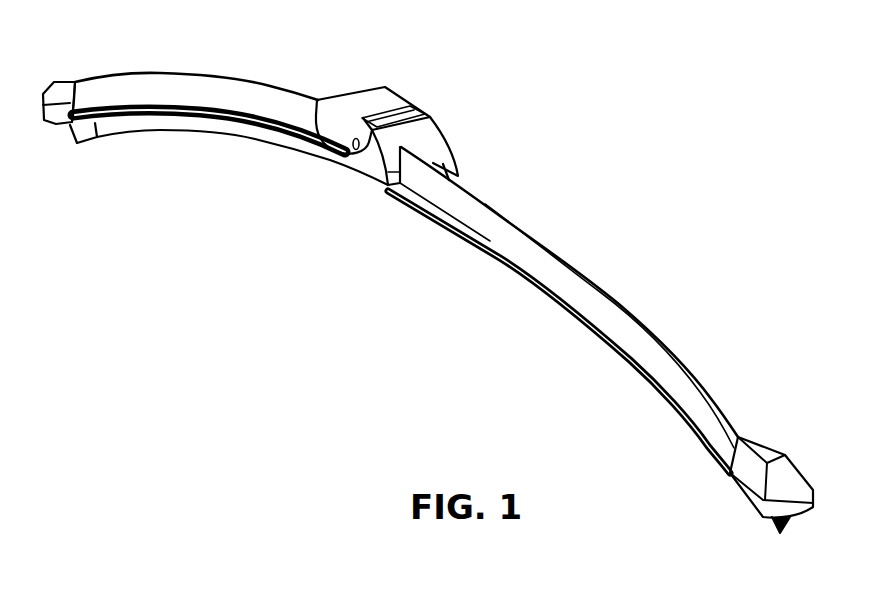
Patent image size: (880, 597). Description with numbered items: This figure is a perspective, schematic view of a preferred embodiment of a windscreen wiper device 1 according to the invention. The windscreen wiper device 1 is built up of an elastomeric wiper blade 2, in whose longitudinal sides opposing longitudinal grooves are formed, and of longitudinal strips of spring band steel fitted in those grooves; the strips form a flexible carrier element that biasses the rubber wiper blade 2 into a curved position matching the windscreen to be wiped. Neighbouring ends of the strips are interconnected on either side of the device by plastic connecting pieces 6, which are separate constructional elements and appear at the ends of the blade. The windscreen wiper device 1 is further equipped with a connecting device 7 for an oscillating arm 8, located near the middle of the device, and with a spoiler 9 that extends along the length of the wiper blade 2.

The windscreen wiper device 1 is at (630, 97).
The wiper blade 2 is at (186, 127).
The connecting piece 6 is at (768, 457).
The connecting device 7 is at (440, 137).
The oscillating arm 8 is at (372, 99).
The spoiler 9 is at (218, 89).